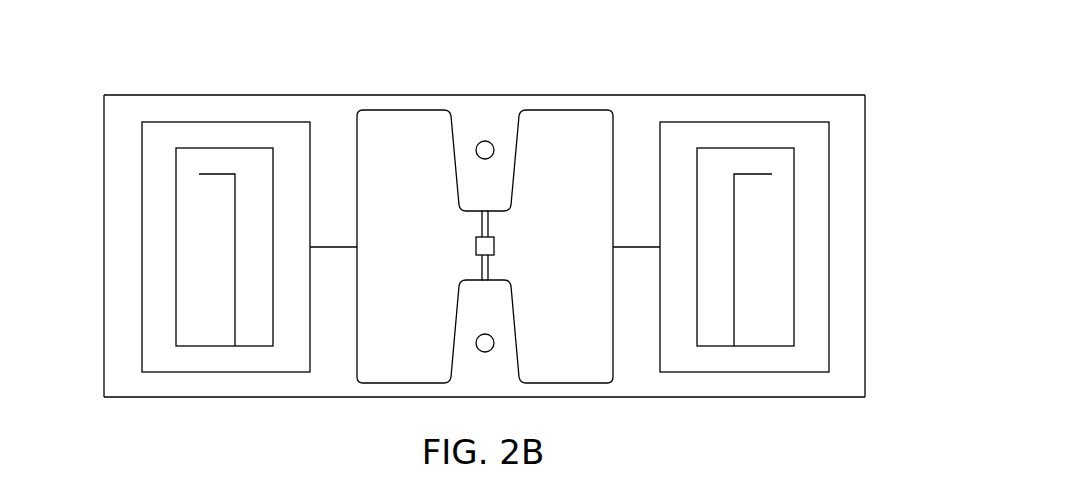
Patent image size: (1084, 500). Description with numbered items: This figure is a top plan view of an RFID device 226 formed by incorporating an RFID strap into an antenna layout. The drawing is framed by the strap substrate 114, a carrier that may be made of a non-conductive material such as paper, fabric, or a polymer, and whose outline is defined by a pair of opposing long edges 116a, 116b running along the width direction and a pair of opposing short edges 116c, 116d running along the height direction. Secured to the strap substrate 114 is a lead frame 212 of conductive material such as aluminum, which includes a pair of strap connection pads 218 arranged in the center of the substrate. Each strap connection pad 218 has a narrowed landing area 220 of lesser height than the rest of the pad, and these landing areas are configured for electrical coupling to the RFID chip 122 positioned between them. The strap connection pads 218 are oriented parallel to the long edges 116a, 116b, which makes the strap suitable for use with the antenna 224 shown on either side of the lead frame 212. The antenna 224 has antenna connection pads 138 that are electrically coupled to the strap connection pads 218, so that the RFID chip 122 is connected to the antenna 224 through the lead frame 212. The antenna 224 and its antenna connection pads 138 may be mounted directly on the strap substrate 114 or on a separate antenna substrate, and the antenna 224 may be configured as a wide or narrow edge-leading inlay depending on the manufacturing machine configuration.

The RFID device 226 is at (872, 93).
The strap substrate 114 is at (322, 117).
The long edge 116a is at (735, 95).
The long edge 116b is at (735, 397).
The short edge 116c is at (104, 248).
The short edge 116d is at (866, 248).
The antenna 224 is at (178, 372).
The antenna connection pads 138 is at (380, 250).
The lead frame 212 is at (617, 97).
The strap connection pads 218 is at (563, 120).
The narrowed landing area 220 is at (464, 210).
The RFID chip 122 is at (476, 250).